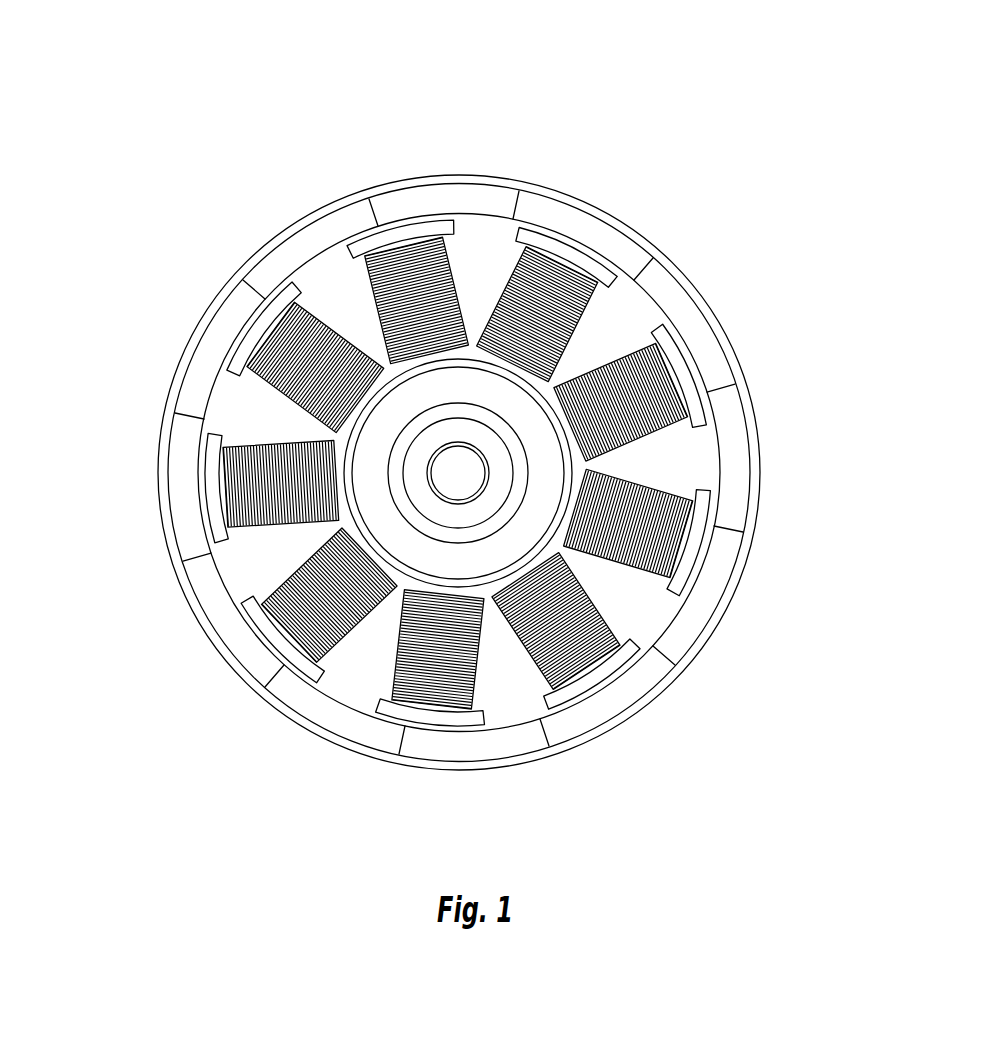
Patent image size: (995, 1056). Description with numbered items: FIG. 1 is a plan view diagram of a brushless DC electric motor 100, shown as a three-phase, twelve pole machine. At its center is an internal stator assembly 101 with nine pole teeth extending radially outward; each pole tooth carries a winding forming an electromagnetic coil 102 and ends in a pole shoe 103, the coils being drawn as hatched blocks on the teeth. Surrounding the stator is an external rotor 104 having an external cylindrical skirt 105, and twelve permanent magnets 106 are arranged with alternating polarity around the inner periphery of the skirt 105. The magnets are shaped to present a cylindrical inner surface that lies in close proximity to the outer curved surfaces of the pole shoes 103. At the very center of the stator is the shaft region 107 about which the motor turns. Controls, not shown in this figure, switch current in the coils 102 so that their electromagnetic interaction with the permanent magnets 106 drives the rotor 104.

The electric motor 100 is at (319, 88).
The internal stator assembly 101 is at (473, 372).
The electromagnetic coil 102 is at (257, 442).
The pole shoe 103 is at (398, 232).
The external rotor 104 is at (778, 433).
The external cylindrical skirt 105 is at (762, 495).
The permanent magnets 106 is at (672, 297).
The shaft 107 is at (452, 477).